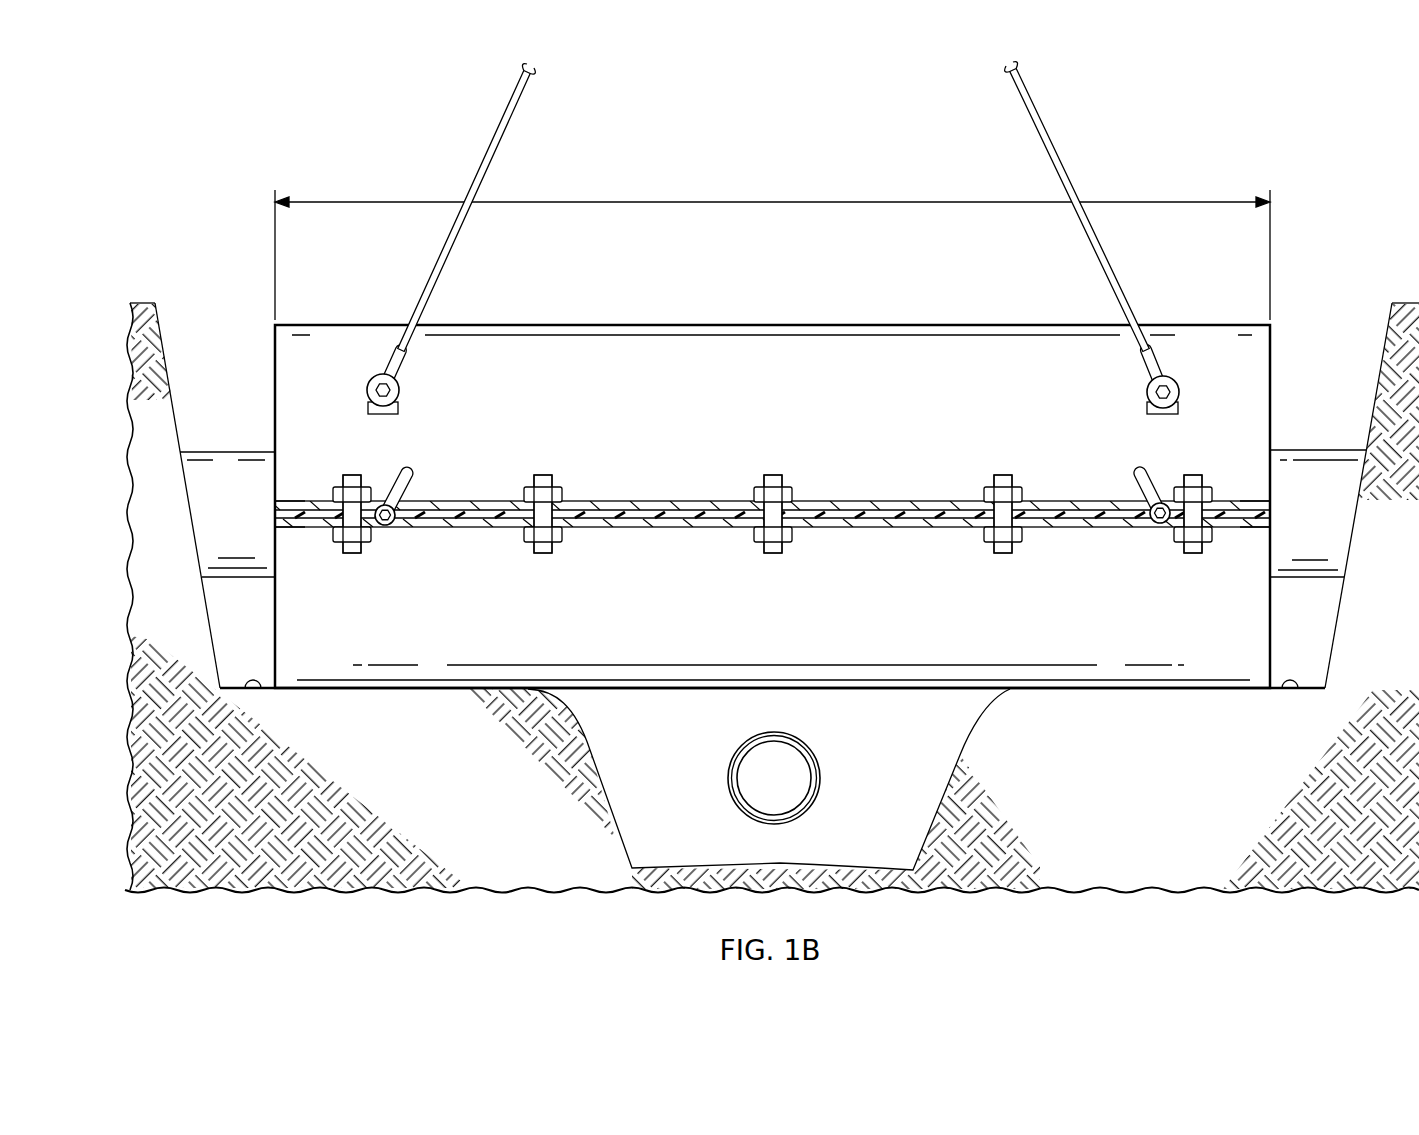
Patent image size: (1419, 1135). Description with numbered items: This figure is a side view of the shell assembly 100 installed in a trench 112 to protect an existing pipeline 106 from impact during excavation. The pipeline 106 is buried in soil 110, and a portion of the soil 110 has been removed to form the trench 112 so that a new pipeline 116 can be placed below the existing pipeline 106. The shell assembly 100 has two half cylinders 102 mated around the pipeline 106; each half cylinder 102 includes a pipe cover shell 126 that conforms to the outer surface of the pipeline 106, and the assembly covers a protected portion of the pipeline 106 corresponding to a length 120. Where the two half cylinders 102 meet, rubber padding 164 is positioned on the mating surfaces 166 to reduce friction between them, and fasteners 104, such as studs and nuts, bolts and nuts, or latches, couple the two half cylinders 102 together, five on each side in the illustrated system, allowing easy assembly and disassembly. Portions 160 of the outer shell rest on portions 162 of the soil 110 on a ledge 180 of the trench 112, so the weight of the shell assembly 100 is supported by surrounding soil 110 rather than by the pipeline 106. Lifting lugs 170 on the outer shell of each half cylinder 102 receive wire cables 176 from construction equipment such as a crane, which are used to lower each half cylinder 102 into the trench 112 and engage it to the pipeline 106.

The shell assembly 100 is at (1222, 94).
The half cylinder 102 is at (842, 278).
The fasteners 104 is at (349, 555).
The pipeline 106 is at (227, 452).
The soil 110 is at (1370, 616).
The trench 112 is at (1302, 409).
The new pipeline 116 is at (728, 778).
The length 120 is at (772, 200).
The pipe cover shell 126 is at (637, 325).
The portions of the outer shell 160 is at (427, 660).
The portions of the soil 162 is at (427, 716).
The rubber padding 164 is at (300, 514).
The mating surfaces 166 is at (675, 514).
The lifting lugs 170 is at (383, 368).
The wire cables 176 is at (482, 168).
The ledge 180 is at (246, 690).